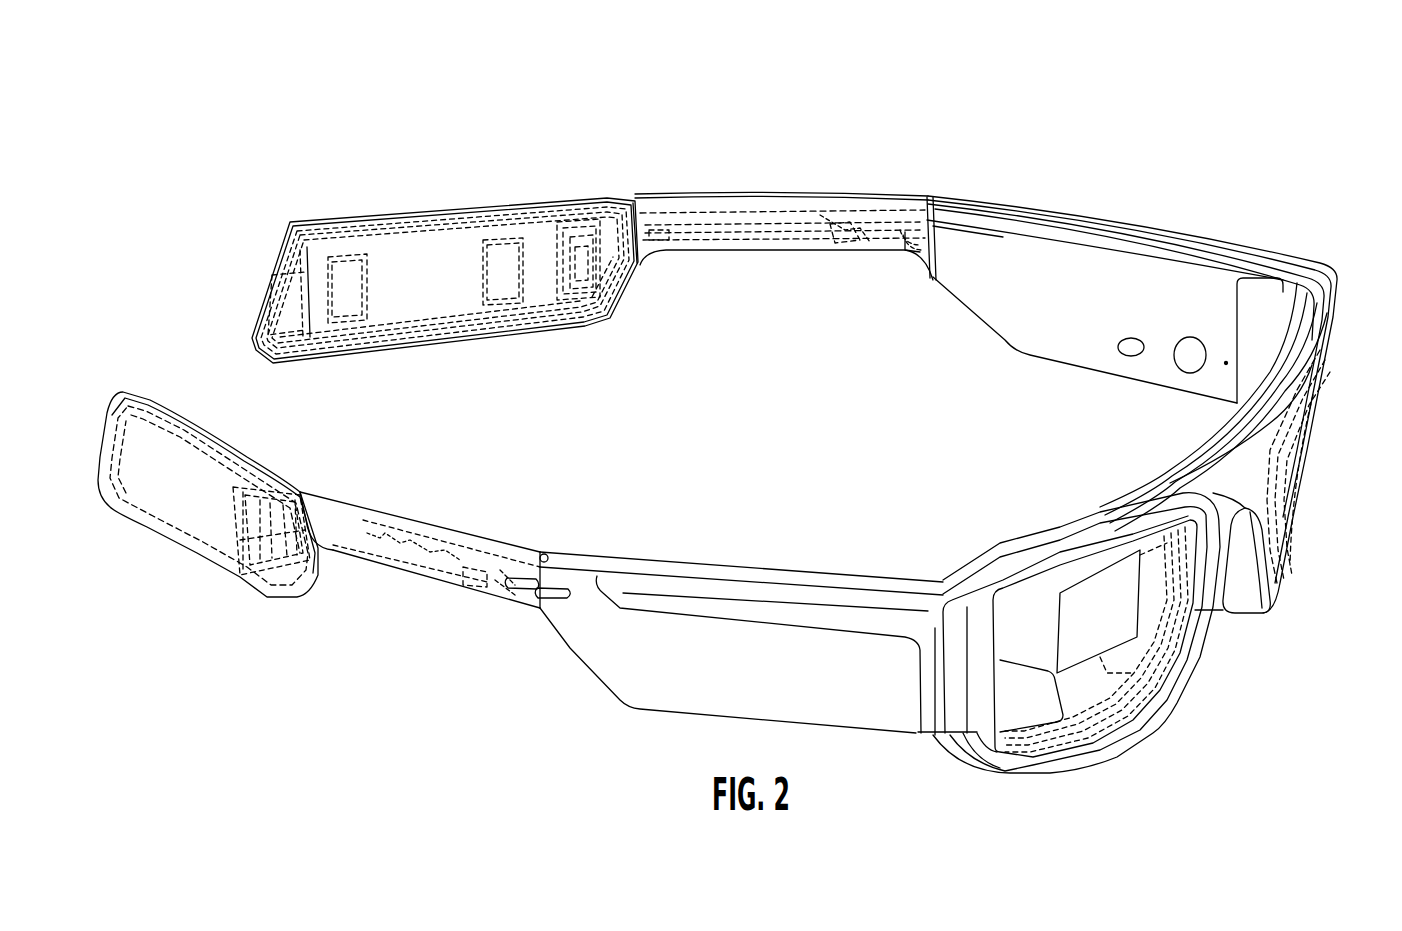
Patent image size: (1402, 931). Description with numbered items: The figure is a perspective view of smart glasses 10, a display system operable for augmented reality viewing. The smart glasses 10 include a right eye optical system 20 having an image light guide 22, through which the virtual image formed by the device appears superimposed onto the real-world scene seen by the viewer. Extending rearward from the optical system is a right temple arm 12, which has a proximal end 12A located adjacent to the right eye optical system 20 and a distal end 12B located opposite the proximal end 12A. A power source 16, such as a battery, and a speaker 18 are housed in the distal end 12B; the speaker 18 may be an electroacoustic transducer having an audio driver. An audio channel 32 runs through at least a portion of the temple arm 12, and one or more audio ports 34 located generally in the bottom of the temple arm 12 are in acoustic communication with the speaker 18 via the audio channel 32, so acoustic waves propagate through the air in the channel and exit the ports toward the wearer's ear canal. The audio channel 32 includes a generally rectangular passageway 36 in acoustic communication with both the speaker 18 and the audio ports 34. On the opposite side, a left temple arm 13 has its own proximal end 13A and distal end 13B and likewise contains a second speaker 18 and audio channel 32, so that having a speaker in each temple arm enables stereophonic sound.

The smart glasses 10 is at (980, 150).
The right temple arm 12 is at (520, 551).
The proximal end 12A is at (572, 705).
The distal end 12B is at (128, 542).
The left temple arm 13 is at (832, 213).
The proximal end 13A is at (908, 292).
The distal end 13B is at (318, 213).
The power source 16 is at (430, 240).
The speaker 18 is at (575, 215).
The right eye optical system 20 is at (1332, 232).
The image light guide 22 is at (1048, 590).
The audio channel 32 is at (683, 211).
The audio ports 34 is at (835, 243).
The passageway 36 is at (745, 213).